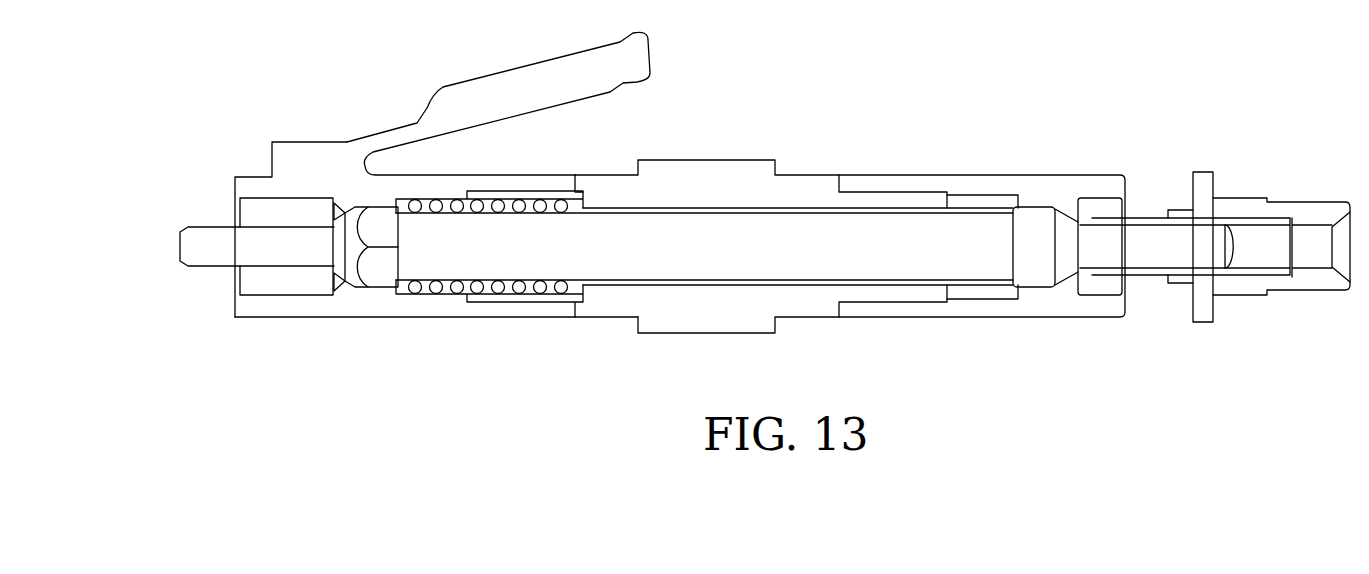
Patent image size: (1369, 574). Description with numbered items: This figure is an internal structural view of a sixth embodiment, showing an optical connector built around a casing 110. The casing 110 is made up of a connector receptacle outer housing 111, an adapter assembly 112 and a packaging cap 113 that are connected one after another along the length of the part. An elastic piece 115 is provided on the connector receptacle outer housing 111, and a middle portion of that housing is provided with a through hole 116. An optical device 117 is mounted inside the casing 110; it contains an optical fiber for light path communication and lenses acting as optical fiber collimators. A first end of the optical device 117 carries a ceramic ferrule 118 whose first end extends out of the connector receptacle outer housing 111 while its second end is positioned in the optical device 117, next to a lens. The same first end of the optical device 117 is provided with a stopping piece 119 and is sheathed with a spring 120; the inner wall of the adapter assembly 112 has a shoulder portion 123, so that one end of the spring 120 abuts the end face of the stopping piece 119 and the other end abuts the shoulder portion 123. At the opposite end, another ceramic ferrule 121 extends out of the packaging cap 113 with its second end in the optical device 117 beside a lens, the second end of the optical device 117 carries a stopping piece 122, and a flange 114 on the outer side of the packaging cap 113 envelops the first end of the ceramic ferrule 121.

The casing 110 is at (958, 73).
The connector receptacle outer housing 111 is at (362, 300).
The adapter assembly 112 is at (708, 183).
The packaging cap 113 is at (1008, 300).
The flange 114 is at (1333, 278).
The elastic piece 115 is at (535, 82).
The through hole 116 is at (247, 282).
The optical device 117 is at (647, 262).
The ceramic ferrule 118 is at (257, 243).
The stopping piece 119 is at (383, 222).
The spring 120 is at (448, 297).
The ceramic ferrule 121 is at (1173, 238).
The stopping piece 122 is at (1047, 228).
The shoulder portion 123 is at (583, 190).